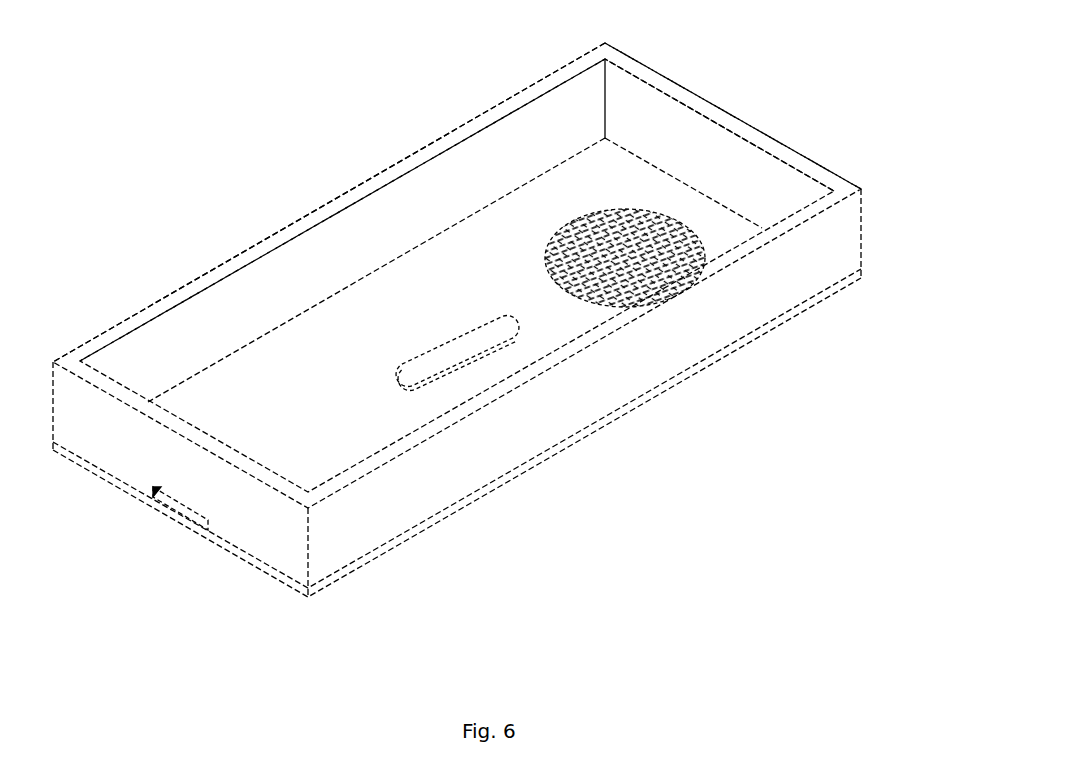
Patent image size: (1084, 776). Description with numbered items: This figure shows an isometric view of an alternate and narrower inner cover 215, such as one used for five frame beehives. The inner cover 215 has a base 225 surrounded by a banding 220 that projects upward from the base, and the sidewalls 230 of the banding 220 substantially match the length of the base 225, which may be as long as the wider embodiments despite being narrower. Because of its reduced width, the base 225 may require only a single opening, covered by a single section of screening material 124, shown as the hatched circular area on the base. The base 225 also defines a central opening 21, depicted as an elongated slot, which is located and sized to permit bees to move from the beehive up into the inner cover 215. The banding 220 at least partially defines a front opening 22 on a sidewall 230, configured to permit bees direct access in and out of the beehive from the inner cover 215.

The inner cover 215 is at (457, 319).
The banding 220 is at (712, 100).
The sidewalls 230 is at (450, 175).
The base 225 is at (318, 322).
The screening material 124 is at (677, 226).
The central opening 21 is at (467, 365).
The front opening 22 is at (180, 505).